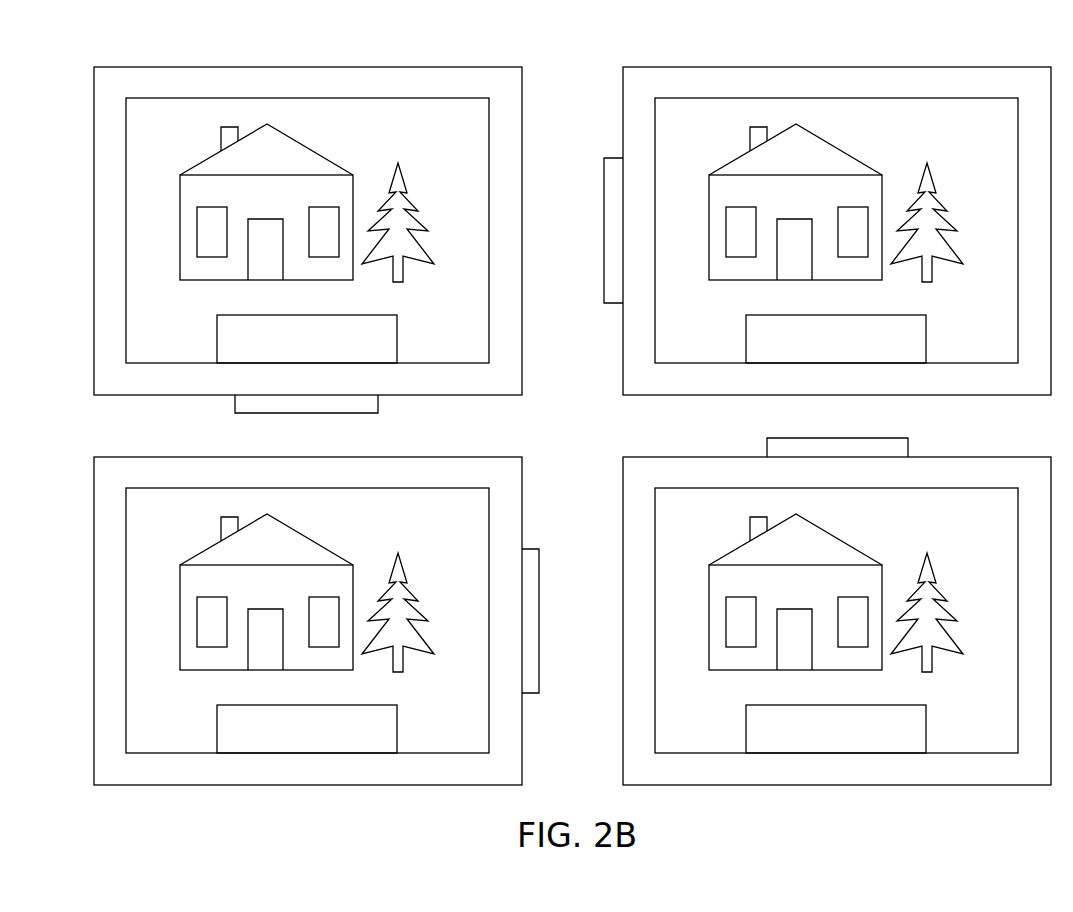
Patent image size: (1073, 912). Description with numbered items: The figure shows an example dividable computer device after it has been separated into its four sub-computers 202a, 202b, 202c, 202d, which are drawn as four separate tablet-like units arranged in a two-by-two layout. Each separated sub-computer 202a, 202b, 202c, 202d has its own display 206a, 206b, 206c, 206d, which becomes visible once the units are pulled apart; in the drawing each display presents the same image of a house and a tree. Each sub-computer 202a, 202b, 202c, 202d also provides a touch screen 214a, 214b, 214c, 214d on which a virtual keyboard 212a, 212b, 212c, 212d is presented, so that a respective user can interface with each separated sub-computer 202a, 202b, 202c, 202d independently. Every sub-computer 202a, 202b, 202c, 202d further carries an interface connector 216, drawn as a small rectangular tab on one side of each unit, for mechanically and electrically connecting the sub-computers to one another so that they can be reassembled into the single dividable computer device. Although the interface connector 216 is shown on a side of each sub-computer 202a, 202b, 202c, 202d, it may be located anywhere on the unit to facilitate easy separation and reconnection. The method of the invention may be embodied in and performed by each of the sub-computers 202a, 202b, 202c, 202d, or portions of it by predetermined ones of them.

The sub-computer 202a is at (293, 67).
The sub-computer 202b is at (837, 205).
The sub-computer 202c is at (837, 596).
The sub-computer 202d is at (308, 596).
The display 206a is at (392, 98).
The display 206b is at (836, 195).
The display 206c is at (848, 587).
The display 206d is at (318, 587).
The virtual keyboard 212a is at (397, 344).
The virtual keyboard 212b is at (872, 339).
The virtual keyboard 212c is at (871, 729).
The virtual keyboard 212d is at (342, 729).
The touch screen 214a is at (196, 333).
The touch screen 214b is at (820, 229).
The touch screen 214c is at (820, 619).
The touch screen 214d is at (290, 619).
The interface connector 216 is at (235, 403).